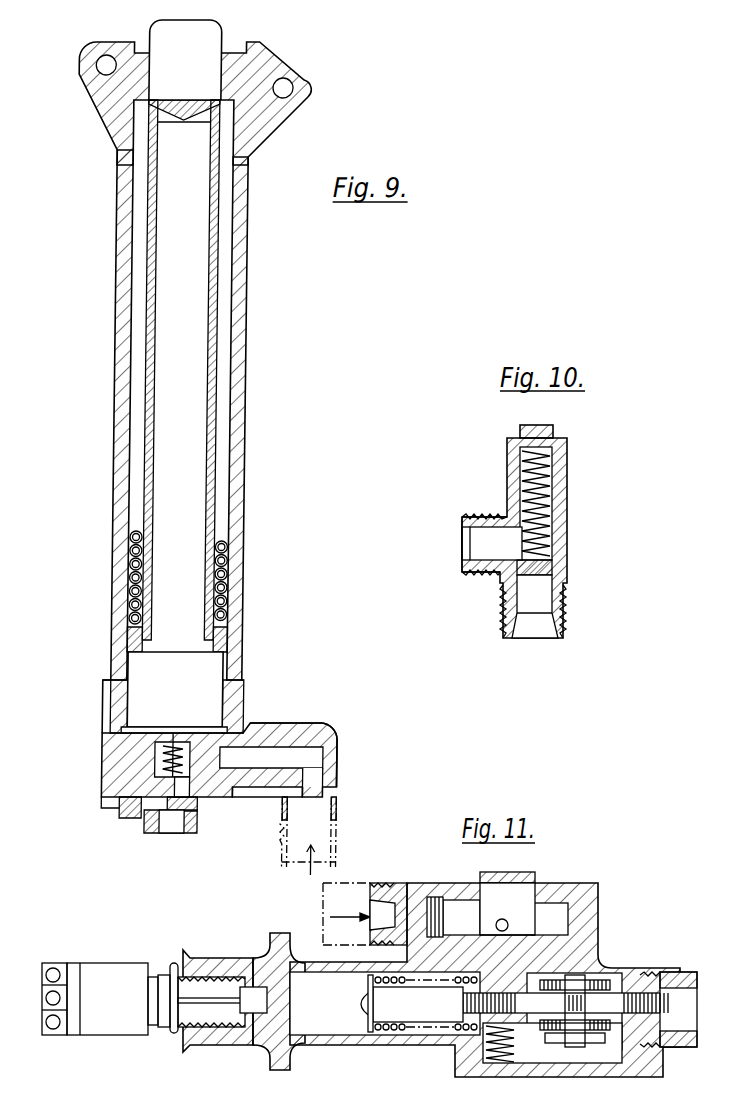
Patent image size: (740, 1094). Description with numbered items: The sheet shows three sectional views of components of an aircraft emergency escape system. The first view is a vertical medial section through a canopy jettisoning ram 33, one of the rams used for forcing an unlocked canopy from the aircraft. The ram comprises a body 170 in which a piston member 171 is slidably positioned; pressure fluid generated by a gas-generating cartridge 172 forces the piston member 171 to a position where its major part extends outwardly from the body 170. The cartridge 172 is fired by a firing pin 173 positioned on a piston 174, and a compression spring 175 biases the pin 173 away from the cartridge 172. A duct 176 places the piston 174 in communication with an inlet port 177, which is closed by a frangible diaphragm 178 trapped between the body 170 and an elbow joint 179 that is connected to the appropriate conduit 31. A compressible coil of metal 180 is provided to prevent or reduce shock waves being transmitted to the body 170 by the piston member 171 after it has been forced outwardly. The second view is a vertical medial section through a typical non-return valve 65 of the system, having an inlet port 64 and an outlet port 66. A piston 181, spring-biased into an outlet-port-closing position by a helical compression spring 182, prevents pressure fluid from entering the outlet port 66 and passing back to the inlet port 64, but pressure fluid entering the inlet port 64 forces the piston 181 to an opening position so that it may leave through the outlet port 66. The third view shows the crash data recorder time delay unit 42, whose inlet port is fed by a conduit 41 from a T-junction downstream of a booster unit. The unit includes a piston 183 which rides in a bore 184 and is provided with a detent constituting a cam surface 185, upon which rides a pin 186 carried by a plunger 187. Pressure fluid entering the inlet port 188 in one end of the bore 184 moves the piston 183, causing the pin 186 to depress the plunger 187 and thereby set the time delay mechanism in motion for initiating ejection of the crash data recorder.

In FIG. 9, the ram 33 is at (116, 302).
In FIG. 9, the body 170 is at (240, 412).
In FIG. 9, the piston member 171 is at (212, 327).
In FIG. 9, the gas-generating cartridge 172 is at (213, 690).
In FIG. 9, the firing pin 173 is at (133, 799).
In FIG. 9, the piston 174 is at (162, 820).
In FIG. 9, the compression spring 175 is at (186, 760).
In FIG. 9, the duct 176 is at (223, 804).
In FIG. 9, the inlet port 177 is at (248, 757).
In FIG. 9, the frangible diaphragm 178 is at (258, 798).
In FIG. 9, the elbow joint 179 is at (340, 768).
In FIG. 9, the compressible coil of metal 180 is at (228, 550).
In FIG. 9, the conduit 31 is at (345, 846).
In FIG. 10, the non-return valve 65 is at (574, 544).
In FIG. 10, the outlet port 66 is at (470, 542).
In FIG. 10, the helical compression spring 182 is at (547, 501).
In FIG. 10, the piston 181 is at (554, 567).
In FIG. 10, the inlet port 64 is at (548, 608).
In FIG. 11, the time delay unit 42 is at (606, 943).
In FIG. 11, the conduit 41 is at (356, 884).
In FIG. 11, the inlet port 188 is at (396, 884).
In FIG. 11, the bore 184 is at (448, 897).
In FIG. 11, the piston 183 is at (453, 915).
In FIG. 11, the plunger 187 is at (506, 921).
In FIG. 11, the cam surface 185 is at (494, 932).
In FIG. 11, the pin 186 is at (525, 926).